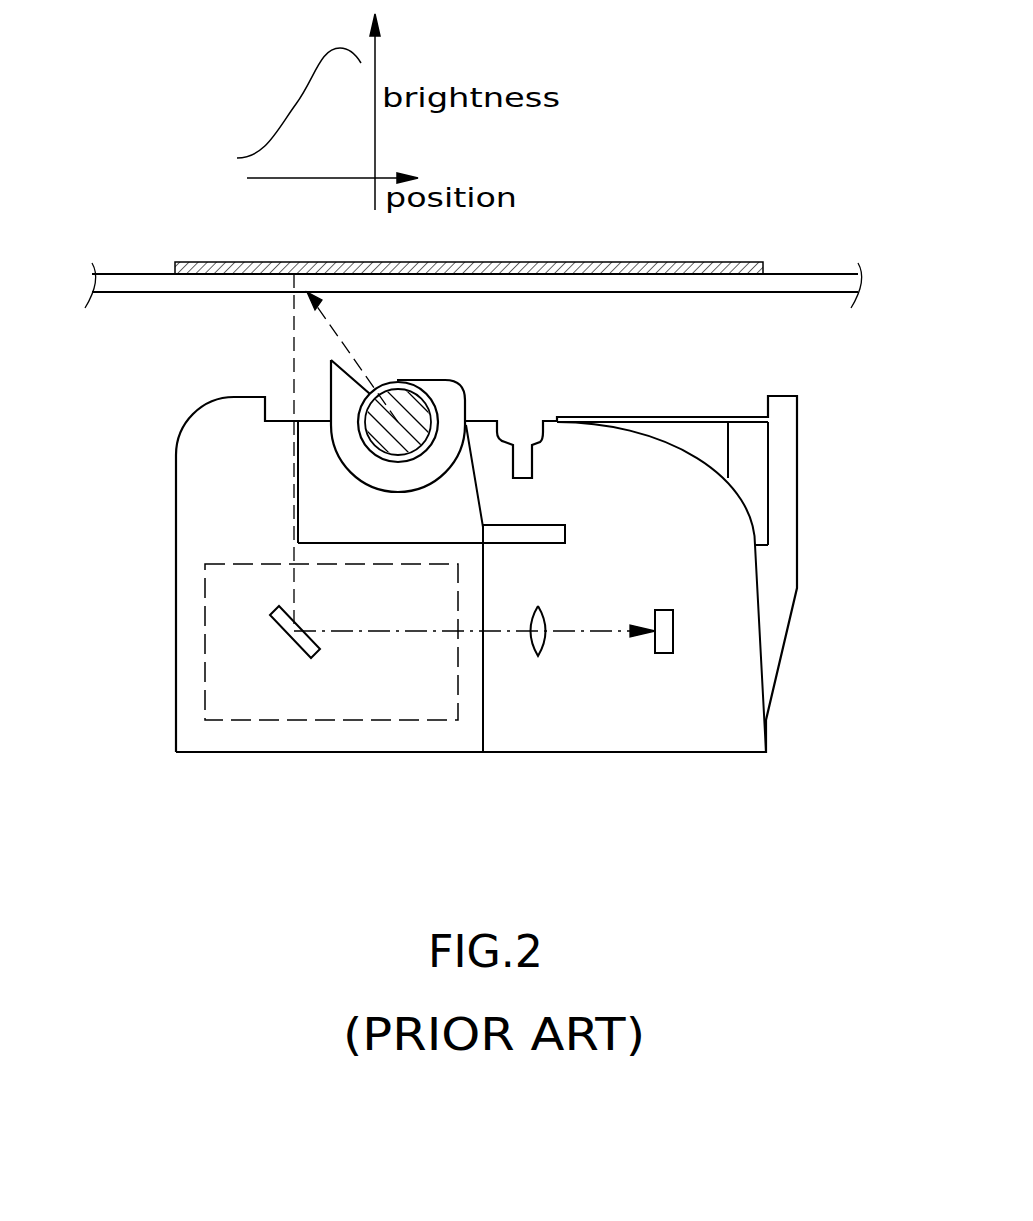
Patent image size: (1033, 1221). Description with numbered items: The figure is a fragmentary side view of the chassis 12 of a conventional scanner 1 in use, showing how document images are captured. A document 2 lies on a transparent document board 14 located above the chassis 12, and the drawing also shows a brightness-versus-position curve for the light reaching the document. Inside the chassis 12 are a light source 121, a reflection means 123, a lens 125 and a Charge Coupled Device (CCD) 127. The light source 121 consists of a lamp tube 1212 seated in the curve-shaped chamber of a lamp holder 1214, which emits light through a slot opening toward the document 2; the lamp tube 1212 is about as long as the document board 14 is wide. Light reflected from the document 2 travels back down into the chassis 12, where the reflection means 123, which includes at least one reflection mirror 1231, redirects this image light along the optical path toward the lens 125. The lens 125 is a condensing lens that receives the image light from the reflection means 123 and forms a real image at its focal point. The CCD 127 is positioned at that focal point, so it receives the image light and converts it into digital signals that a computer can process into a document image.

The scanner 1 is at (822, 487).
The document 2 is at (608, 230).
The chassis 12 is at (288, 740).
The transparent document board 14 is at (795, 283).
The light source 121 is at (450, 298).
The lamp tube 1212 is at (400, 402).
The lamp holder 1214 is at (453, 393).
The reflection means 123 is at (218, 660).
The reflection mirror 1231 is at (272, 614).
The lens 125 is at (540, 642).
The Charge Coupled Device (CCD) 127 is at (673, 632).